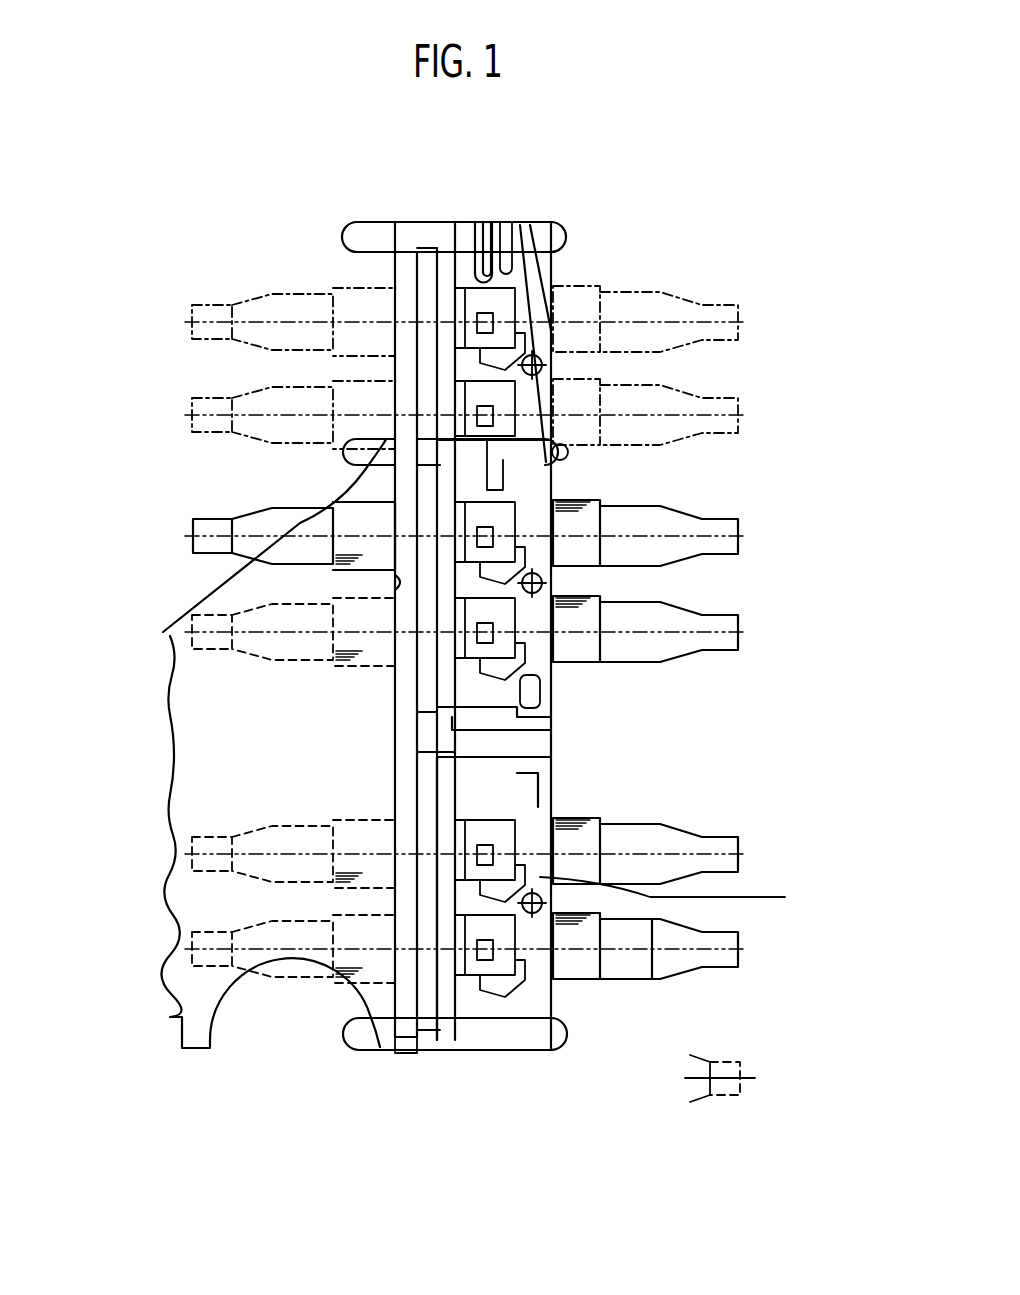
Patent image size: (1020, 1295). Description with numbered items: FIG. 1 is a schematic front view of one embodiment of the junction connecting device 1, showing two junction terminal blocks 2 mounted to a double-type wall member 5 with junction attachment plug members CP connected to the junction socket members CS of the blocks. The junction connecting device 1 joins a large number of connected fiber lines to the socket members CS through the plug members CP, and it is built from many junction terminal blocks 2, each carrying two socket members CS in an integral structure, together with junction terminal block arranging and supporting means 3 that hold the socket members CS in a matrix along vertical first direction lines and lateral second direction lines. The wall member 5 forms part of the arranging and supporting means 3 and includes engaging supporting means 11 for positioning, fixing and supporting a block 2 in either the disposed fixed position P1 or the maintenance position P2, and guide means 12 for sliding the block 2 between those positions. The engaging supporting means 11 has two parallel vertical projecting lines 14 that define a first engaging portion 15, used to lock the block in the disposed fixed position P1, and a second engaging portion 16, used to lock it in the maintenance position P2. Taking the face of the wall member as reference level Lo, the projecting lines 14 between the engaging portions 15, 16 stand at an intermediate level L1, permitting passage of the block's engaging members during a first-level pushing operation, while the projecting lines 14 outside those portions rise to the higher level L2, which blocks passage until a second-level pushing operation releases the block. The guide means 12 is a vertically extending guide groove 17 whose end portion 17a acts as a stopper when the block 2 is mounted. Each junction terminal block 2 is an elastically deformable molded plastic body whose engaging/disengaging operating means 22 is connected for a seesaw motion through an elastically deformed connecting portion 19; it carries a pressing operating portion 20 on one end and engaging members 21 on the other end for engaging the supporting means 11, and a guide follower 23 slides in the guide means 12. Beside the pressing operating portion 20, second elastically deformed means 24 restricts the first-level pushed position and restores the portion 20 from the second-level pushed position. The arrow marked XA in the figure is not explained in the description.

The junction connecting device 1 is at (185, 246).
The junction terminal block 2 is at (187, 507).
The junction terminal block arranging and supporting means 3 is at (240, 1003).
The wall member 5 is at (165, 775).
The engaging supporting means 11 is at (477, 747).
The guide means 12 is at (385, 703).
The projecting lines 14 is at (450, 823).
The first engaging portion 15 is at (540, 700).
The second engaging portion 16 is at (440, 484).
The guide groove 17 is at (400, 583).
The end portion of the guide groove 17a is at (437, 712).
The elastically deformed connecting portion 19 is at (515, 553).
The pressing operating portion 20 is at (568, 452).
The engaging members 21 is at (437, 752).
The engaging/disengaging operating means 22 is at (567, 648).
The guide follower 23 is at (405, 257).
The second elastically deformed means 24 is at (505, 440).
The junction attachment plug member CP is at (748, 302).
The junction socket member CS is at (435, 312).
The view direction XA is at (468, 200).
The disposed fixed position P1 is at (754, 589).
The maintenance position P2 is at (762, 376).
The intermediate level L1 is at (540, 990).
The reference level Lo is at (440, 990).
The outer level L2 is at (477, 1050).